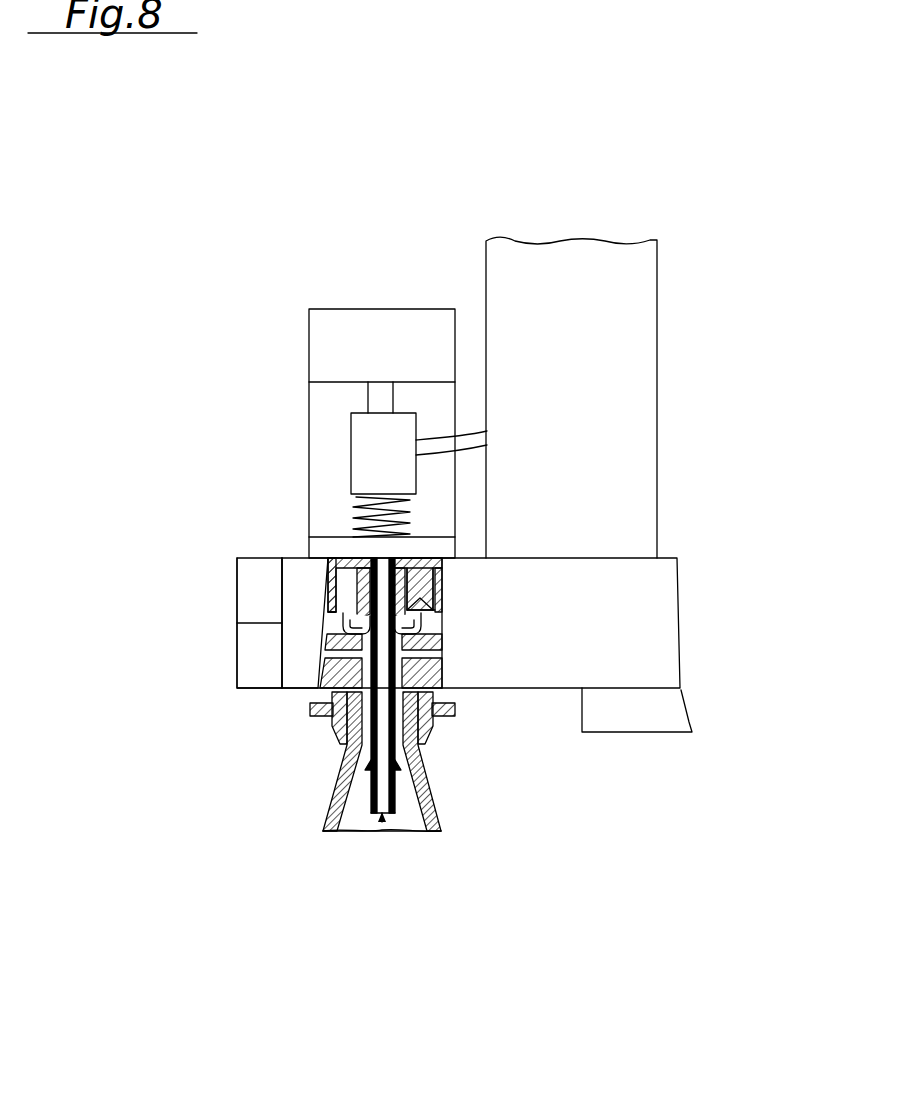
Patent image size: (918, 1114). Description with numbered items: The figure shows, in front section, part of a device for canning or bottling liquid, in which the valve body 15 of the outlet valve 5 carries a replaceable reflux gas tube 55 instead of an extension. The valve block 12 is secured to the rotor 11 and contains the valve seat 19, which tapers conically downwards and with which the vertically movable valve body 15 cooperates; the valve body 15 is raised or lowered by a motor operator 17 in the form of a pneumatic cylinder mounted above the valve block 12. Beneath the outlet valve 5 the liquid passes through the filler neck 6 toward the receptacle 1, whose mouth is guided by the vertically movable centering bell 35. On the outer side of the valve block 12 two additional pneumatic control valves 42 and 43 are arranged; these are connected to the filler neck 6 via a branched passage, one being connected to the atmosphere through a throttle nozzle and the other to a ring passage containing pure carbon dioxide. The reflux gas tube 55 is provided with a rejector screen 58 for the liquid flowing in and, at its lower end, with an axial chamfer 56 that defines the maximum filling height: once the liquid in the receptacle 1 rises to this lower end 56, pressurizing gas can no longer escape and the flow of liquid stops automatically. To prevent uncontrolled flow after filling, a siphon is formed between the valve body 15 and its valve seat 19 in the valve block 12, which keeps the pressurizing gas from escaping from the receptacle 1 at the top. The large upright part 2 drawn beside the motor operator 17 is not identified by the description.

The receptacle 1 is at (325, 832).
The housing column 2 is at (618, 368).
The outlet valve 5 is at (439, 597).
The filler neck 6 is at (433, 717).
The rotor 11 is at (660, 704).
The valve block 12 is at (634, 622).
The valve body 15 is at (336, 578).
The motor operator 17 is at (403, 353).
The valve seat 19 is at (343, 633).
The centering bell 35 is at (332, 717).
The pneumatic control valve 42 is at (258, 568).
The pneumatic control valve 43 is at (262, 686).
The reflux gas tube 55 is at (400, 788).
The axial chamfer 56 is at (382, 824).
The rejector screen 58 is at (371, 768).